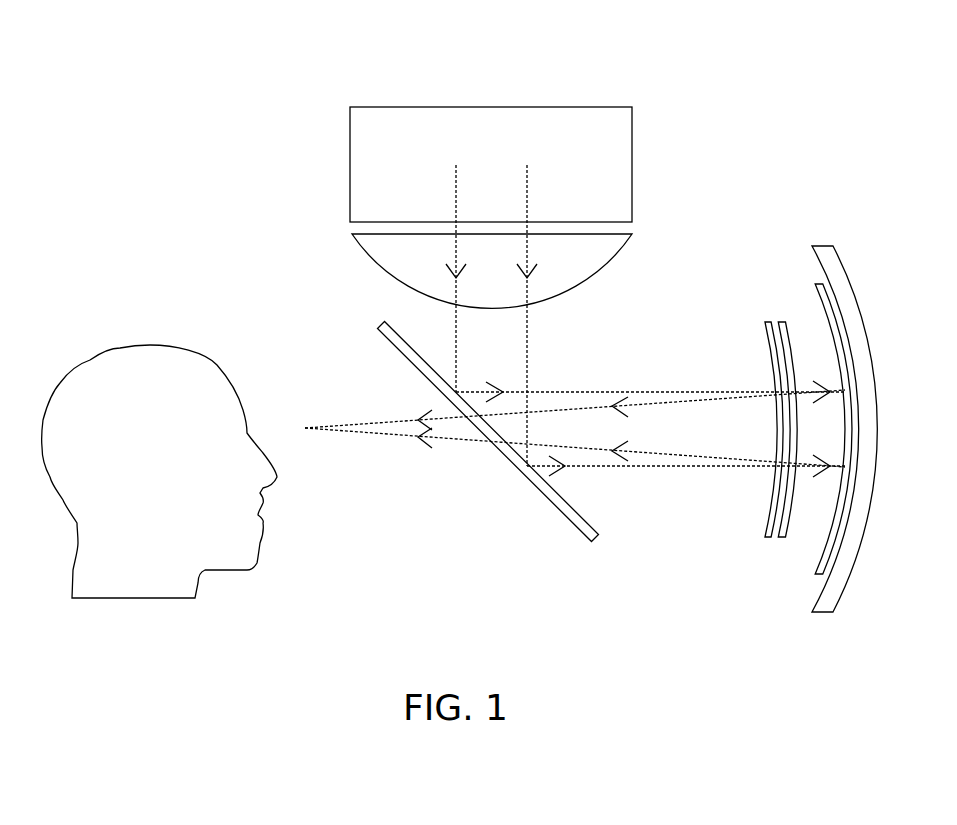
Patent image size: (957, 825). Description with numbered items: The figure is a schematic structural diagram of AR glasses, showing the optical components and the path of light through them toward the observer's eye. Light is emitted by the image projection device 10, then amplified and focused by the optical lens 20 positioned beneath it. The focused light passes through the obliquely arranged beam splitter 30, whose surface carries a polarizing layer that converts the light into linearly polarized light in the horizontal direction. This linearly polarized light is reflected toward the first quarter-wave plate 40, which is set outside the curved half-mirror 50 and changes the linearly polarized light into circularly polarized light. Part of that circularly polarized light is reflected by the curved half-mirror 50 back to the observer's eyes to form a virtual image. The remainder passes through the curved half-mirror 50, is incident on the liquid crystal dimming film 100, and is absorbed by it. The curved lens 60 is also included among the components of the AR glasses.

The image projection device 10 is at (452, 122).
The optical lens 20 is at (396, 263).
The beam splitter 30 is at (560, 525).
The first ¼λ wave plate 40 is at (766, 361).
The curved half-mirror 50 is at (763, 549).
The curved lens 60 is at (830, 226).
The liquid crystal dimming film 100 is at (804, 584).